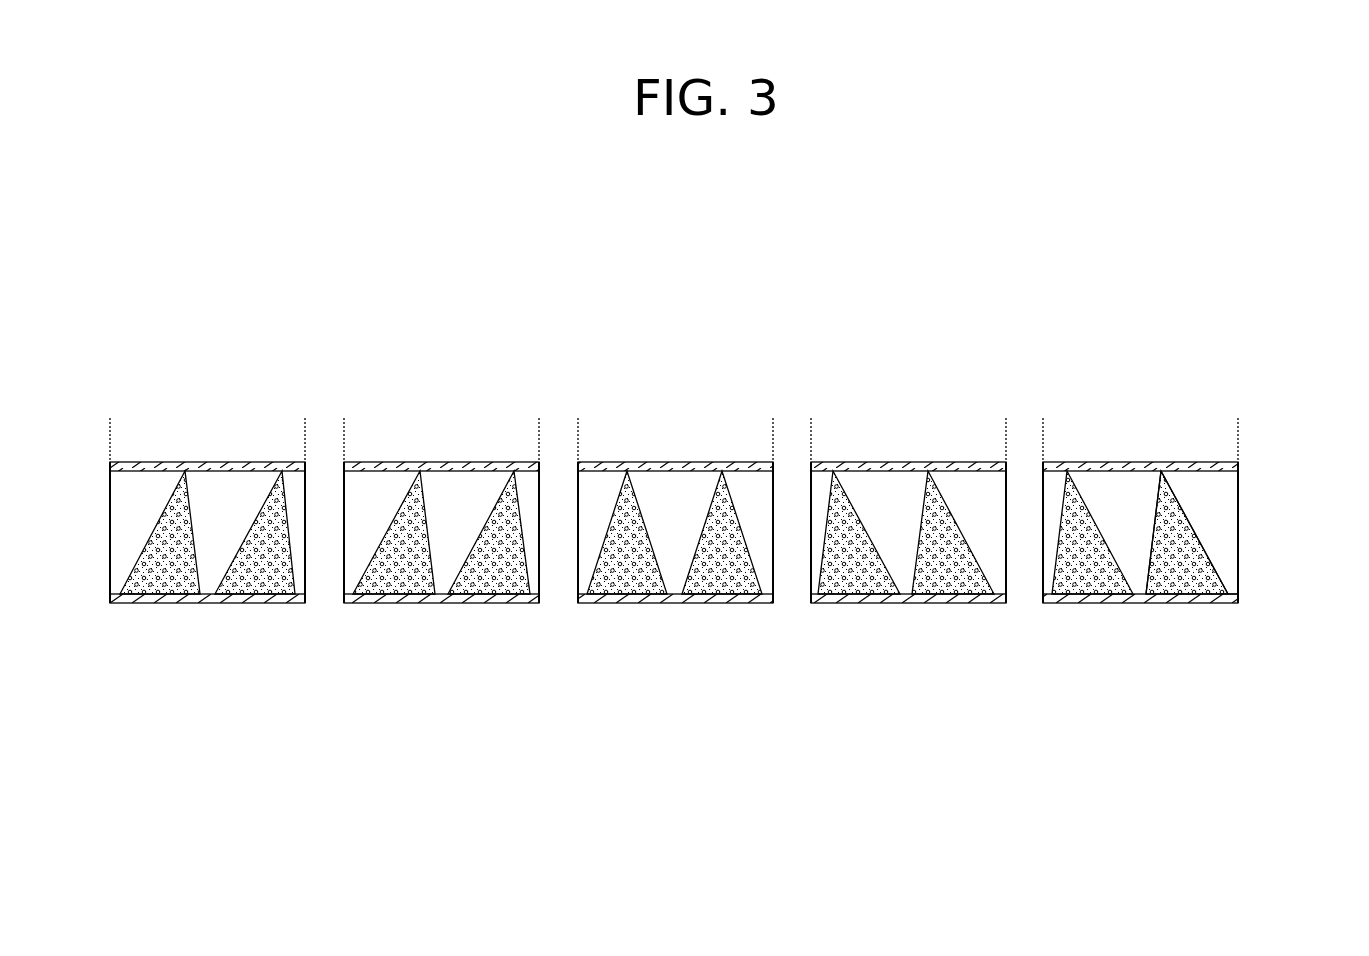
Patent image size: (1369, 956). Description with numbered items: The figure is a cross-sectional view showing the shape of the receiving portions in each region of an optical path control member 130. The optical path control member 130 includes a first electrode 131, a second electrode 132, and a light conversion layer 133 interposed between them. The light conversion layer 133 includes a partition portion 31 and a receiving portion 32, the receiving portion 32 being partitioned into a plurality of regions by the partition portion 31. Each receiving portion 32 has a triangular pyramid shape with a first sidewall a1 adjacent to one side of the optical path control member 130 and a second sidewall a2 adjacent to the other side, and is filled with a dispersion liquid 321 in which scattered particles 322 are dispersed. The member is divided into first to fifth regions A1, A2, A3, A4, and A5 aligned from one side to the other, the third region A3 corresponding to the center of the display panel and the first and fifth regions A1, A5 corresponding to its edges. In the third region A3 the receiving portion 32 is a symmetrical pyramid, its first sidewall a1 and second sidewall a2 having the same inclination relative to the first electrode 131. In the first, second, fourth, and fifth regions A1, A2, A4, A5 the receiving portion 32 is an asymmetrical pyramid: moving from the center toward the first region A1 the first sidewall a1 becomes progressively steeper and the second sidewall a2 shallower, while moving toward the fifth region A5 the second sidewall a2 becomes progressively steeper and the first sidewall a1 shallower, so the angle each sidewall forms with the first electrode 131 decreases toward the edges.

The optical path control member 130 is at (1254, 424).
The first electrode 131 is at (1235, 599).
The second electrode 132 is at (1233, 465).
The light conversion layer 133 is at (1250, 532).
The partition portion 31 is at (1220, 550).
The receiving portion 32 is at (1215, 576).
The dispersion liquid 321 is at (1176, 492).
The scattered particles 322 is at (1186, 517).
The first region A1 is at (112, 437).
The second region A2 is at (346, 437).
The third region A3 is at (580, 437).
The fourth region A4 is at (813, 437).
The fifth region A5 is at (1045, 437).
The first sidewall a1 is at (152, 531).
The second sidewall a2 is at (294, 583).